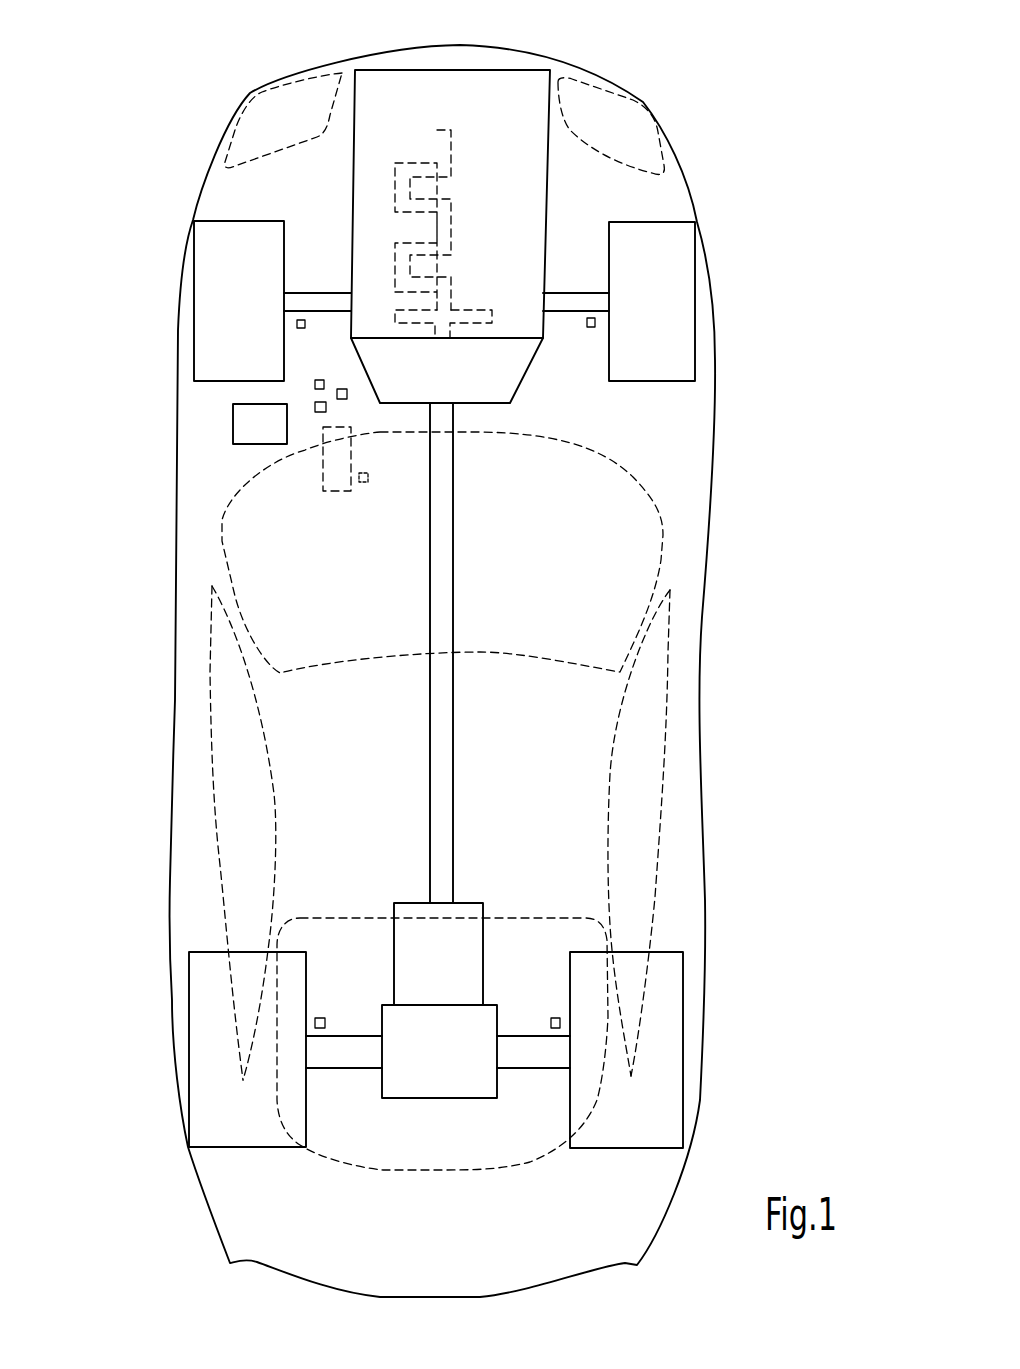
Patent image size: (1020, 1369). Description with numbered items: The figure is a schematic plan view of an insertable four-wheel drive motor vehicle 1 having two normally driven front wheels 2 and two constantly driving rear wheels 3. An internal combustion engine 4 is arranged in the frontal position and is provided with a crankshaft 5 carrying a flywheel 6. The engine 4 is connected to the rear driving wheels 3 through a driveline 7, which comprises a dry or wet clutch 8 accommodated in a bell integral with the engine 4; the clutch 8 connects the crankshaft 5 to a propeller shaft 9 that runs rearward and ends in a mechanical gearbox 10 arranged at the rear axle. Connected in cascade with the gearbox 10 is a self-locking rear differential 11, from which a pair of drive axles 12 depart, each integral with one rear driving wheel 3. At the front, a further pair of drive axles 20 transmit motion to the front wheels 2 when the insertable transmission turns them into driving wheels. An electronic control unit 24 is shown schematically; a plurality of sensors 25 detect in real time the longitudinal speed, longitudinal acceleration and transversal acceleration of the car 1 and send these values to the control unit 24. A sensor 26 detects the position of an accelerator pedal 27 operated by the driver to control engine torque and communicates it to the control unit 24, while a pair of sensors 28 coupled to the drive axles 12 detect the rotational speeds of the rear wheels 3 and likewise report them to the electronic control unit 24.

The motor vehicle 1 is at (165, 1150).
The front wheels 2 is at (200, 260).
The rear wheels 3 is at (198, 1043).
The internal combustion engine 4 is at (525, 147).
The crankshaft 5 is at (451, 222).
The flywheel 6 is at (473, 310).
The driveline 7 is at (722, 551).
The clutch 8 is at (517, 388).
The propeller shaft 9 is at (448, 580).
The mechanical gearbox 10 is at (470, 903).
The self-locking rear differential 11 is at (455, 1098).
The drive axles 12 is at (358, 1063).
The drive axles 20 is at (328, 297).
The electronic control unit 24 is at (240, 422).
The sensors 25 is at (301, 329).
The sensor 26 is at (364, 483).
The accelerator pedal 27 is at (337, 491).
The sensors 28 is at (325, 1019).